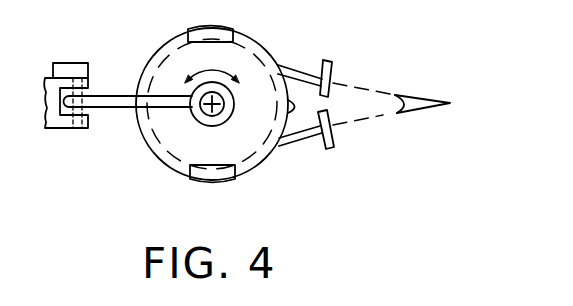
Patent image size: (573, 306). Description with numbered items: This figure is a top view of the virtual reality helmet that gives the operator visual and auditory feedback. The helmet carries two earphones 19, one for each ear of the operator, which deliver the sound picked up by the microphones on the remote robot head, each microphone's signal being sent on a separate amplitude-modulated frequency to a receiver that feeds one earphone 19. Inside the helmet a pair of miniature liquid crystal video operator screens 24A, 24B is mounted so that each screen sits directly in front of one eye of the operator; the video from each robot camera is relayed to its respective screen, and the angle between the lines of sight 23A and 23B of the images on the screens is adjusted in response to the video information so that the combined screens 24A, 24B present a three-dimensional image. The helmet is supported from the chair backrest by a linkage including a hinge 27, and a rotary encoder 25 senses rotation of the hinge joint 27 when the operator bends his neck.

The earphone 19 is at (217, 26).
The rotary encoder 25 is at (84, 63).
The hinge 27 is at (94, 136).
The video operator screen 24A is at (353, 45).
The video operator screen 24B is at (333, 148).
The line of sight 23A is at (358, 86).
The line of sight 23B is at (385, 117).